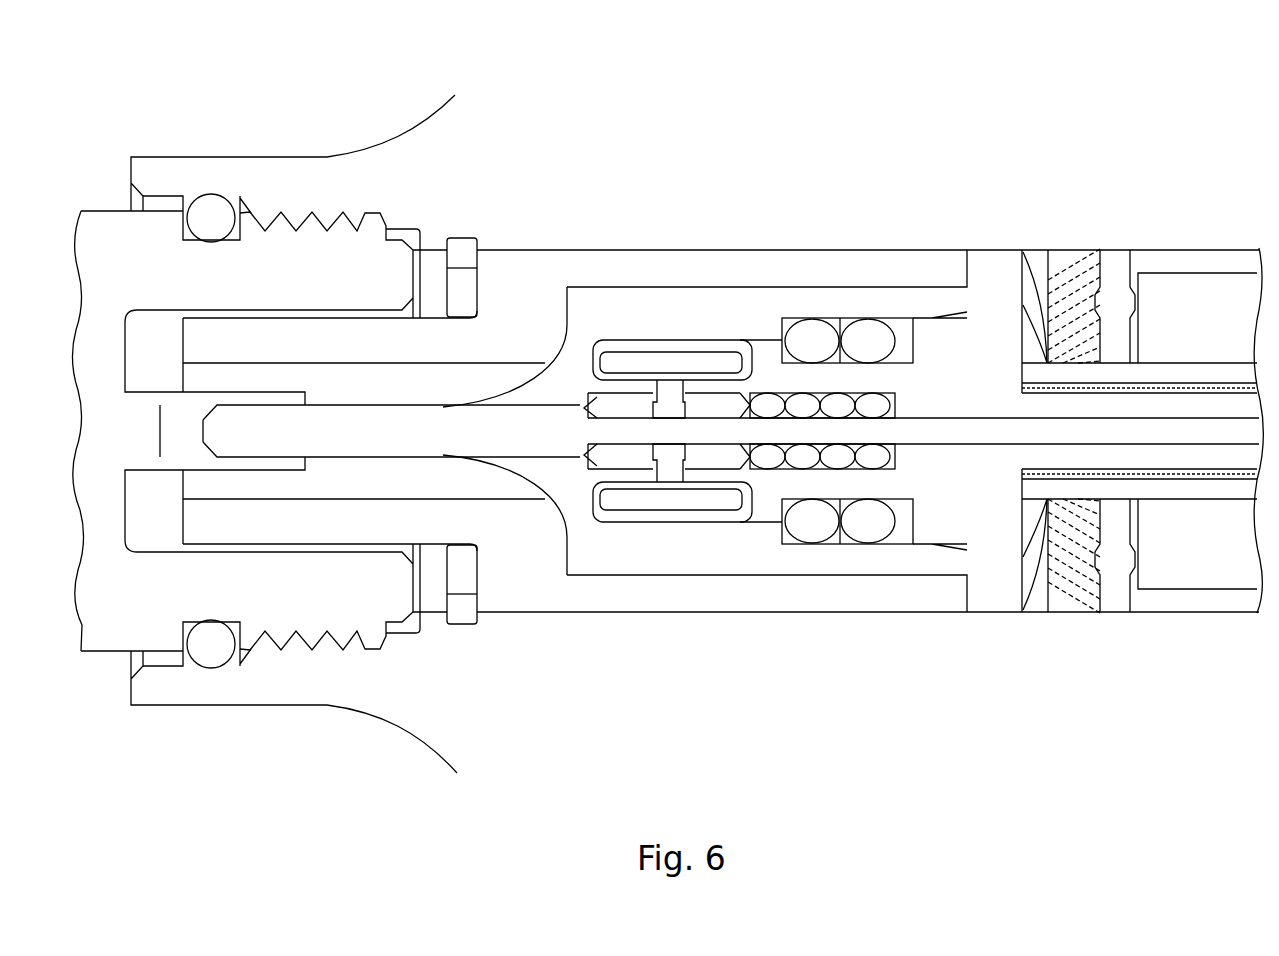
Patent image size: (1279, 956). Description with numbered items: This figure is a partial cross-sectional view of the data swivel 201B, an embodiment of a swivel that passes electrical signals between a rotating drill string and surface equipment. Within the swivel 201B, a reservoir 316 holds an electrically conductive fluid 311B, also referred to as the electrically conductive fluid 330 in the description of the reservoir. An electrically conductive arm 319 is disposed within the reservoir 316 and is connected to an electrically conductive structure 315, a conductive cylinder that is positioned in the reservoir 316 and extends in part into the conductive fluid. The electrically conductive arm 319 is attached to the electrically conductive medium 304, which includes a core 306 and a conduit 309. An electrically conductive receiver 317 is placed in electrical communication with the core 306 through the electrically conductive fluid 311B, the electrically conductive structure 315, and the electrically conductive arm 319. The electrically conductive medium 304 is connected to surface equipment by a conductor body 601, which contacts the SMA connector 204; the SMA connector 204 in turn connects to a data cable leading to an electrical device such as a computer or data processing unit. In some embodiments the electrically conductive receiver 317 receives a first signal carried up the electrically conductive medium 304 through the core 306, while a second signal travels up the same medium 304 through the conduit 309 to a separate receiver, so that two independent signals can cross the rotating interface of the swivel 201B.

The swivel 201B is at (305, 77).
The SMA connector 204 is at (100, 620).
The conductor body 601 is at (512, 430).
The electrically conductive structure 315 is at (655, 507).
The reservoir 316 is at (627, 331).
The electrically conductive fluid 311B is at (700, 522).
The electrically conductive arm 319 is at (670, 413).
The electrically conductive fluid 330 is at (723, 523).
The electrically conductive receiver 317 is at (973, 350).
The core 306 is at (992, 440).
The conduit 309 is at (1153, 375).
The electrically conductive medium 304 is at (1189, 529).